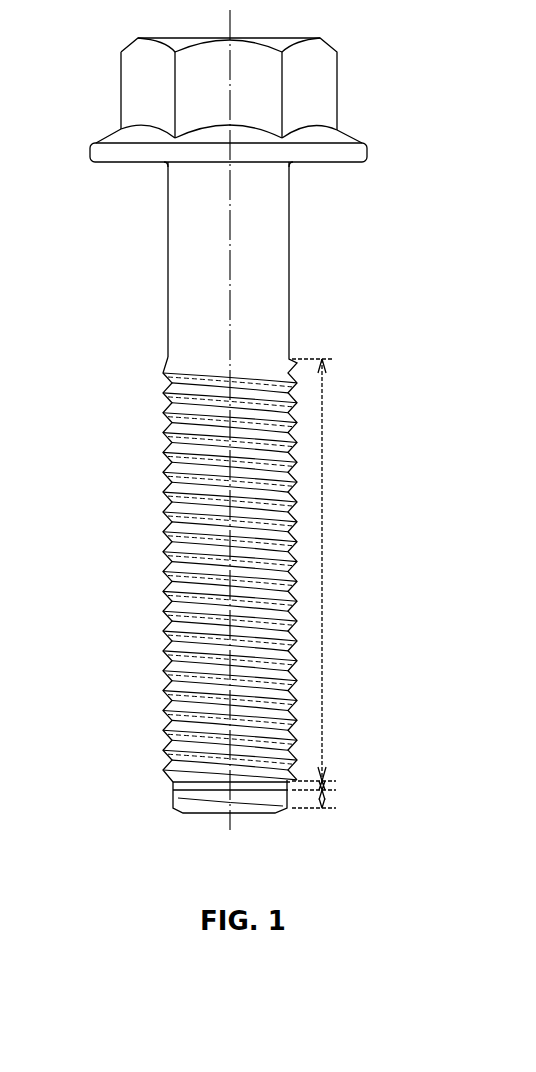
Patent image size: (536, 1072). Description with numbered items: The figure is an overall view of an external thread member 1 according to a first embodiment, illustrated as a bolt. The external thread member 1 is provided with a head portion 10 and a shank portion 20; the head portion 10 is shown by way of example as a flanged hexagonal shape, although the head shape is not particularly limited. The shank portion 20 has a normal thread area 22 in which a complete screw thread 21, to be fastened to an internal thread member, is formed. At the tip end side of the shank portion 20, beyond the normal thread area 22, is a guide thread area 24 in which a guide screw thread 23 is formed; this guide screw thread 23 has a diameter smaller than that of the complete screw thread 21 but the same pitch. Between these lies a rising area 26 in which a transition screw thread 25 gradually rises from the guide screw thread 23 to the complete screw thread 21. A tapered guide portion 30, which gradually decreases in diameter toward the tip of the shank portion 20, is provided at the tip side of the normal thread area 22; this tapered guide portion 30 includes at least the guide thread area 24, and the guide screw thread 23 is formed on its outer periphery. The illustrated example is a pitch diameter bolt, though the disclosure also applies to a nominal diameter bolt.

The external thread member 1 is at (368, 60).
The head portion 10 is at (121, 62).
The shank portion 20 is at (165, 313).
The complete screw thread 21 is at (162, 524).
The normal thread area 22 is at (323, 565).
The guide screw thread 23 is at (279, 812).
The guide thread area 24 is at (323, 794).
The transition screw thread 25 is at (252, 787).
The rising area 26 is at (332, 782).
The tapered guide portion 30 is at (179, 800).